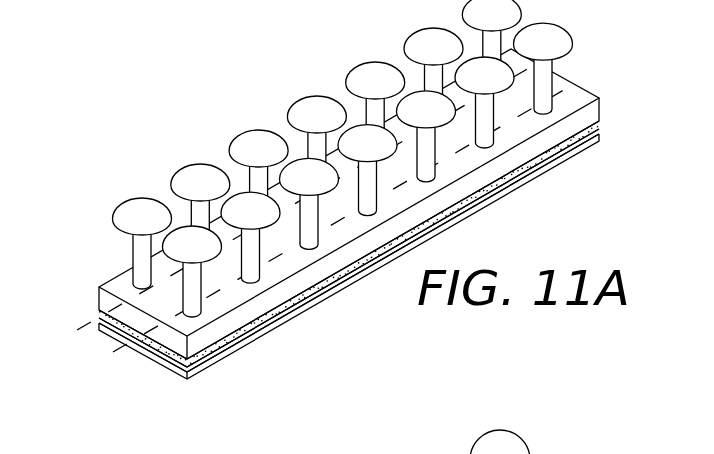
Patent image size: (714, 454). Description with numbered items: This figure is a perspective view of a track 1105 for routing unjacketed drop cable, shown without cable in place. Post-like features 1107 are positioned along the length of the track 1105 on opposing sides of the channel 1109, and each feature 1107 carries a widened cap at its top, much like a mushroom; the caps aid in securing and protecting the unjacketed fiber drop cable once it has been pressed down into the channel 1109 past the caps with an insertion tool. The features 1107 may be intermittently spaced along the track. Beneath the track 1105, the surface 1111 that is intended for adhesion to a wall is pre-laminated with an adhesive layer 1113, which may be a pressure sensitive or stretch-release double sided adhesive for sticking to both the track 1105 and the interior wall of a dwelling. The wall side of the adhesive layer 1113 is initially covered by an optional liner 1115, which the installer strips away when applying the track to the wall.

The track 1105 is at (298, 285).
The features 1107 is at (138, 197).
The channel 1109 is at (316, 176).
The surface 1111 is at (167, 355).
The adhesive layer 1113 is at (250, 325).
The liner 1115 is at (198, 365).